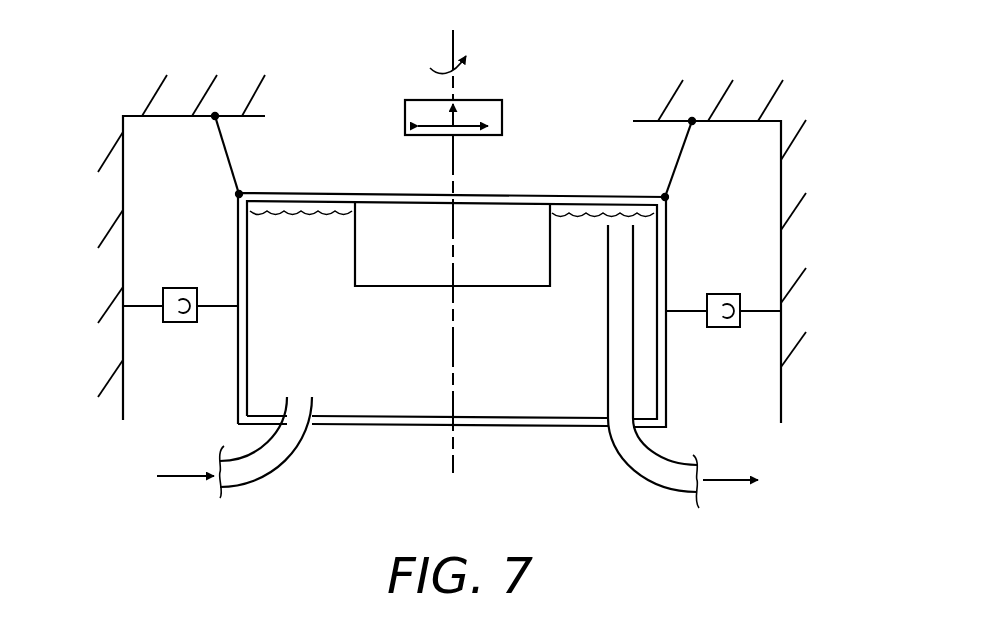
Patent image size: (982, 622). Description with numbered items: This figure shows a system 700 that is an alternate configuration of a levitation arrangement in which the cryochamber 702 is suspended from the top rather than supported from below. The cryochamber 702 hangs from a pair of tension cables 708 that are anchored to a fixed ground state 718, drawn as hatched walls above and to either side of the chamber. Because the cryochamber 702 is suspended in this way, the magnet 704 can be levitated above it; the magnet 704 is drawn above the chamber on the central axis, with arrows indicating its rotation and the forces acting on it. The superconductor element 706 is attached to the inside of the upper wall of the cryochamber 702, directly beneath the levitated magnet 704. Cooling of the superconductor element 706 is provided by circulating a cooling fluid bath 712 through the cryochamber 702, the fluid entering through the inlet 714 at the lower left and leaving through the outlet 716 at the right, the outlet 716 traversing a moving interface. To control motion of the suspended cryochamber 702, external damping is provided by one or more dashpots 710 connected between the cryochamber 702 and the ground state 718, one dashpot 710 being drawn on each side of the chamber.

The system 700 is at (690, 50).
The cryochamber 702 is at (425, 426).
The magnet 704 is at (423, 133).
The superconductor element 706 is at (493, 212).
The tension cables 708 is at (230, 168).
The dashpots 710 is at (163, 292).
The cooling fluid bath 712 is at (255, 377).
The inlet 714 is at (253, 453).
The outlet 716 is at (633, 336).
The ground state 718 is at (735, 120).